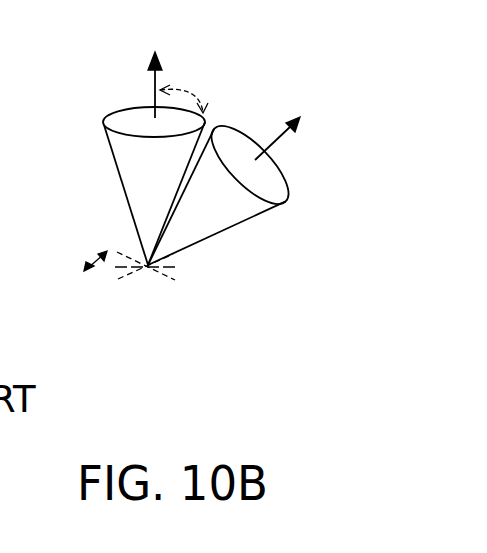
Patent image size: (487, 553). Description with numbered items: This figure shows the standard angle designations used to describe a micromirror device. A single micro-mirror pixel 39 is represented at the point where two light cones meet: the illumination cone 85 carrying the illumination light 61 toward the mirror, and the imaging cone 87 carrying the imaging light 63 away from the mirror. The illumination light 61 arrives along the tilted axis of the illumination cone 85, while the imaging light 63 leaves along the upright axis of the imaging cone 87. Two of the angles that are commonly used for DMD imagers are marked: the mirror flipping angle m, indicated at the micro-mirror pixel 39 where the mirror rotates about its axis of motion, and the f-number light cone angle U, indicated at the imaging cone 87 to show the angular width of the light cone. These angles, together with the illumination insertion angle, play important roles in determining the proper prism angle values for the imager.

The single micro-mirror pixel 39 is at (148, 266).
The illumination light 61 is at (270, 143).
The imaging light 63 is at (155, 82).
The illumination cone 85 is at (205, 217).
The imaging cone 87 is at (145, 195).
The f-number light cone angle U is at (187, 87).
The mirror flipping angle m is at (88, 256).